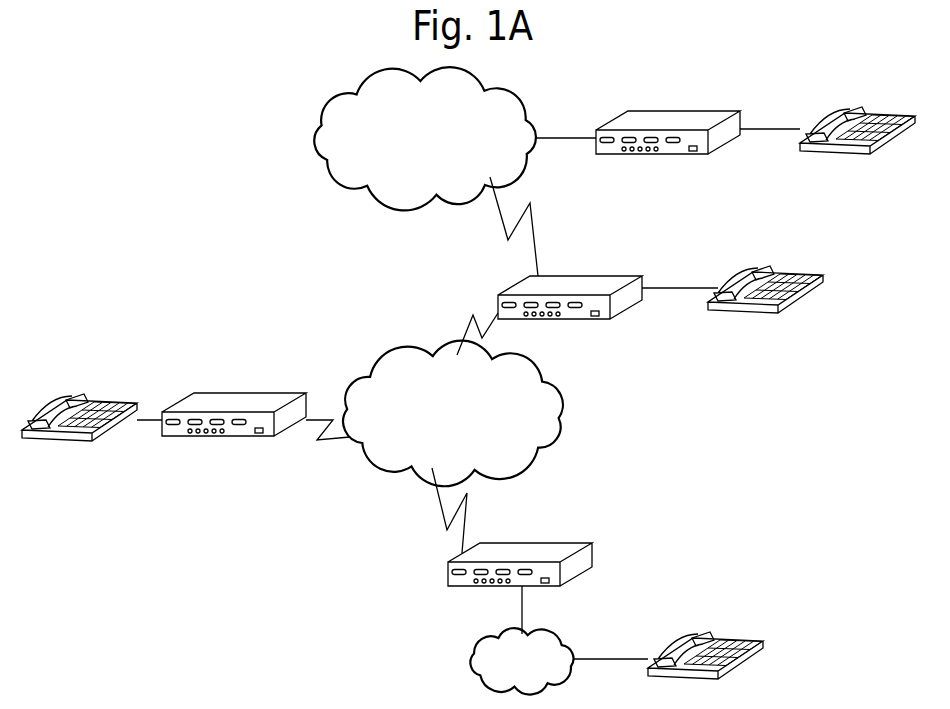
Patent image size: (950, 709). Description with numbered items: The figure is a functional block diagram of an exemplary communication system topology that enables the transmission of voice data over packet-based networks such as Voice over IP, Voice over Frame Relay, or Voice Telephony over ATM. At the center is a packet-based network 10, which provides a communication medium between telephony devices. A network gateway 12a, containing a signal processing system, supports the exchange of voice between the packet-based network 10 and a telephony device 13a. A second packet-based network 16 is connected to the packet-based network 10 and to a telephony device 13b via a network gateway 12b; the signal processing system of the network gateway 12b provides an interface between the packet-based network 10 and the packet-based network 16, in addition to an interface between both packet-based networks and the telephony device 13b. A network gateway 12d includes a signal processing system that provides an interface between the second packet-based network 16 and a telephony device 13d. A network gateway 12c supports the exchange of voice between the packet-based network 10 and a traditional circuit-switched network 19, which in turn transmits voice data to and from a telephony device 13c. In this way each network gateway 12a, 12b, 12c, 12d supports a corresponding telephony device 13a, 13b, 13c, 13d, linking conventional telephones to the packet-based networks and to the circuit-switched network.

The packet-based network 10 is at (380, 372).
The second packet-based network 16 is at (357, 92).
The traditional circuit-switched network 19 is at (487, 640).
The network gateway 12a is at (217, 393).
The network gateway 12b is at (572, 273).
The network gateway 12c is at (538, 541).
The network gateway 12d is at (652, 112).
The telephony device 13a is at (115, 400).
The telephony device 13b is at (803, 270).
The telephony device 13c is at (729, 640).
The telephony device 13d is at (902, 110).